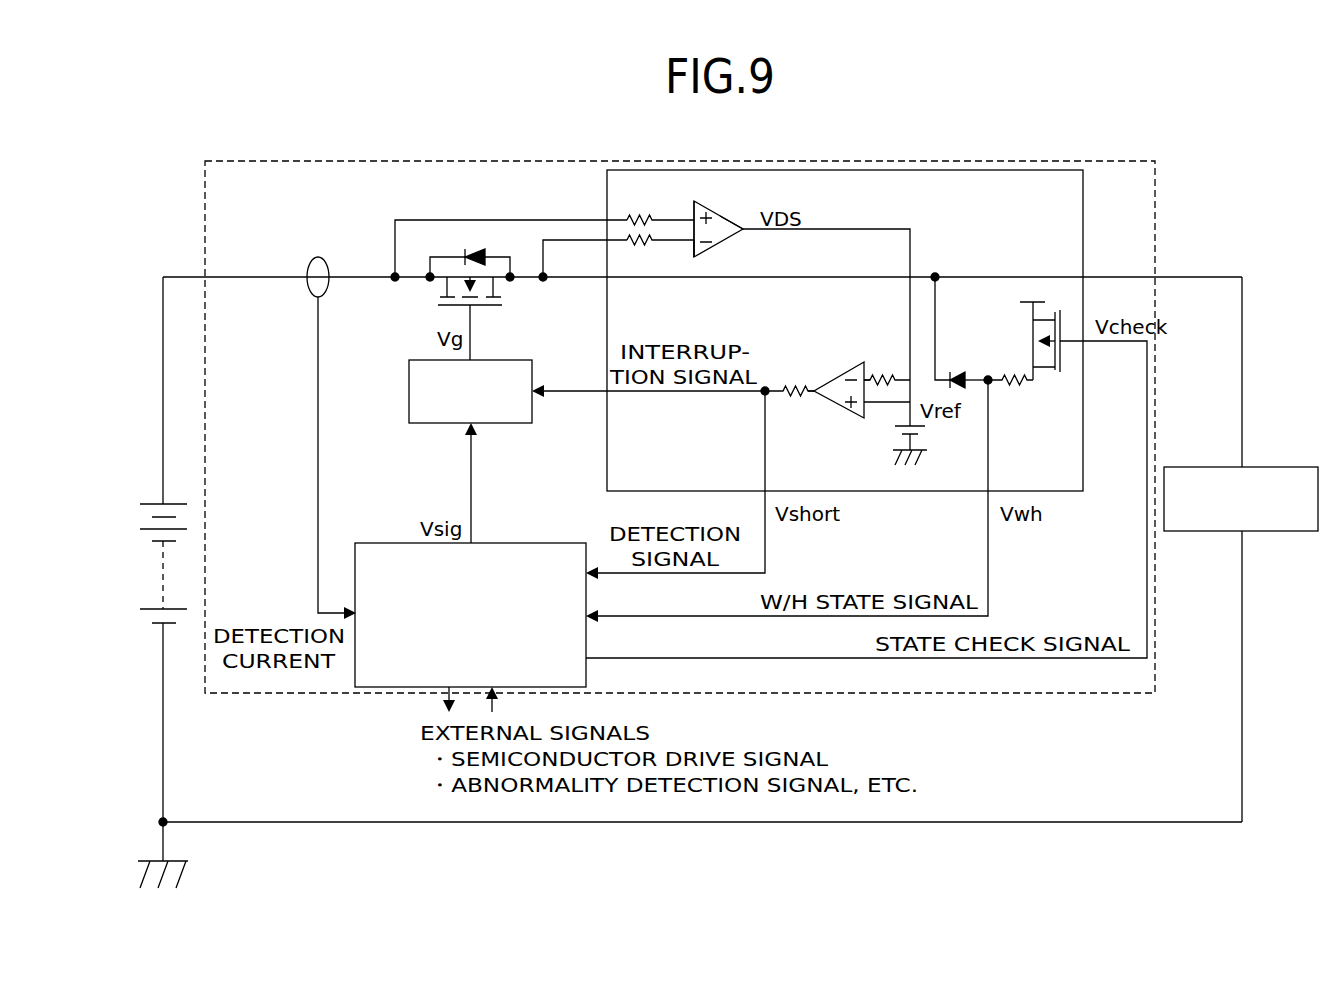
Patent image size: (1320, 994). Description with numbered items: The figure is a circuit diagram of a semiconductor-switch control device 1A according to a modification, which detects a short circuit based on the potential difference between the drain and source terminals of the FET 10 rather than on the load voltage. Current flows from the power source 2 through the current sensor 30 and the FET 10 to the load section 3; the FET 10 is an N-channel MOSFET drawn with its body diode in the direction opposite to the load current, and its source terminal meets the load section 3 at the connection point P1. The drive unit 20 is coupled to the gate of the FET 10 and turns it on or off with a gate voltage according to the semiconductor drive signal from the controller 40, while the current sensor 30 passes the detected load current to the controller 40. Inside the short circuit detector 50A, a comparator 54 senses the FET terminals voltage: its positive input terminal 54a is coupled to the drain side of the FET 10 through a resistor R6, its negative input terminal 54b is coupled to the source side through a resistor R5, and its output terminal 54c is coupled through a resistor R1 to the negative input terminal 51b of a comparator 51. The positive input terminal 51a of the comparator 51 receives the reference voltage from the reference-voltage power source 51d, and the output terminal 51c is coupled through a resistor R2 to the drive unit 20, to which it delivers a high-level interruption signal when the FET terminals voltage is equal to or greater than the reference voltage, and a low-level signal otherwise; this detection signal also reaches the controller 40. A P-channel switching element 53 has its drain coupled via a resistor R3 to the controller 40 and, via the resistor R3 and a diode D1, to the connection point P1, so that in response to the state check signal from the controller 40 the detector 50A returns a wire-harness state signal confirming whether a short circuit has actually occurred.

The semiconductor-switch control device 1A is at (1110, 161).
The power source 2 is at (150, 490).
The load section 3 is at (1285, 467).
The field-effect transistor (FET) 10 is at (494, 246).
The drive unit 20 is at (512, 360).
The current sensor 30 is at (325, 258).
The controller 40 is at (515, 543).
The short circuit detector 50A is at (1085, 215).
The comparator 51 is at (823, 367).
The positive input terminal 51a is at (866, 406).
The negative input terminal 51b is at (869, 378).
The output terminal 51c is at (814, 394).
The reference-voltage power source 51d is at (925, 433).
The switching element 53 is at (1055, 283).
The comparator 54 is at (722, 210).
The positive input terminal 54a is at (690, 222).
The negative input terminal 54b is at (694, 250).
The output terminal 54c is at (745, 240).
The resistor R1 is at (886, 372).
The resistor R2 is at (790, 385).
The resistor R3 is at (1012, 376).
The resistor R5 is at (637, 247).
The resistor R6 is at (636, 218).
The diode D1 is at (958, 376).
The connection point P1 is at (938, 273).